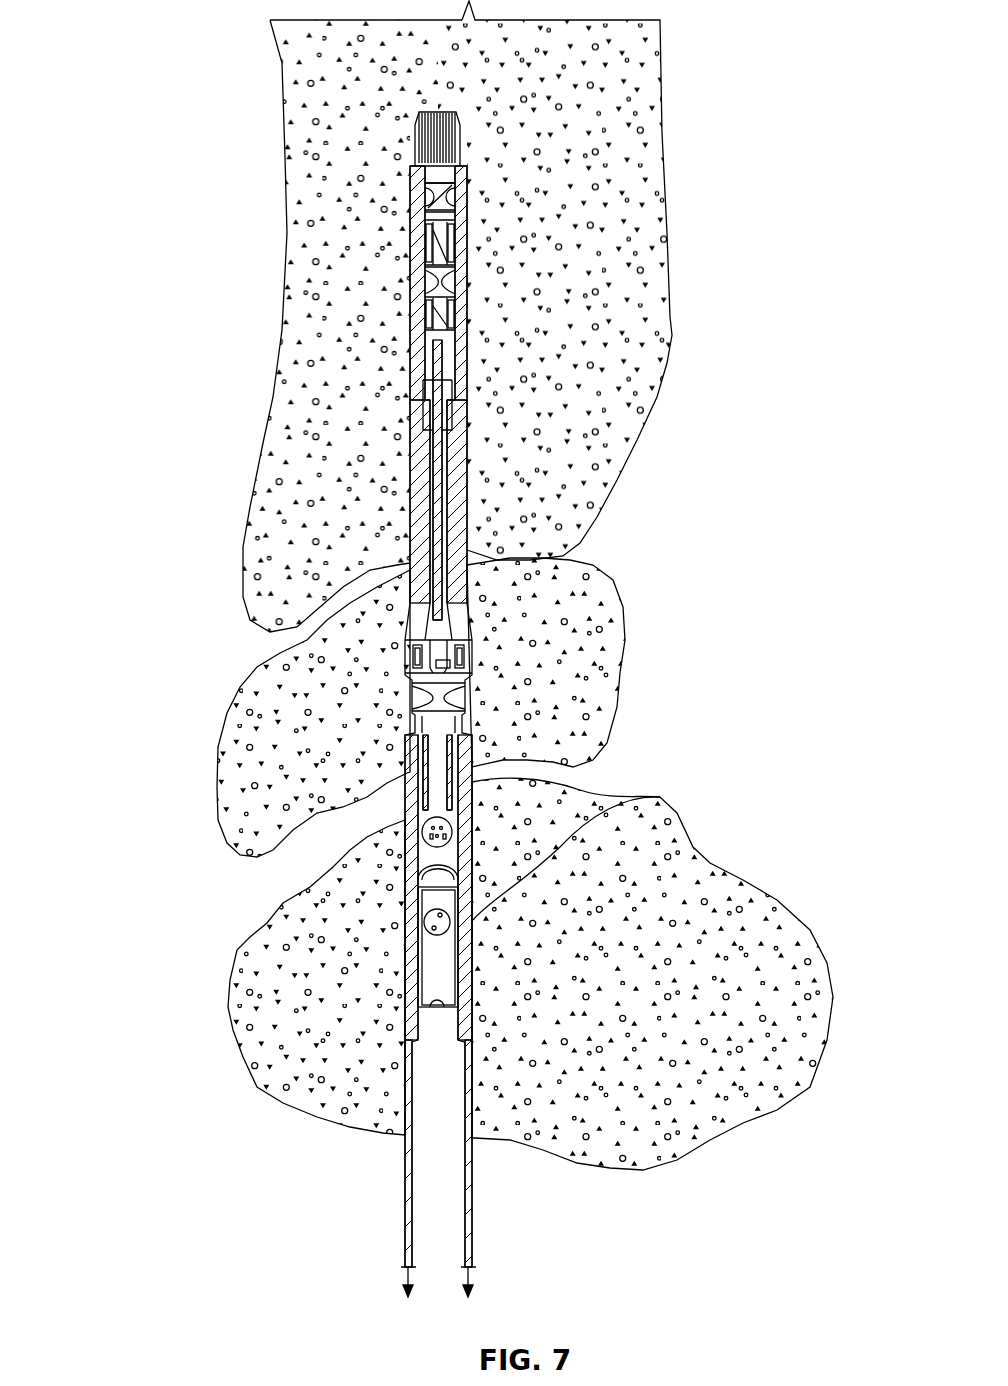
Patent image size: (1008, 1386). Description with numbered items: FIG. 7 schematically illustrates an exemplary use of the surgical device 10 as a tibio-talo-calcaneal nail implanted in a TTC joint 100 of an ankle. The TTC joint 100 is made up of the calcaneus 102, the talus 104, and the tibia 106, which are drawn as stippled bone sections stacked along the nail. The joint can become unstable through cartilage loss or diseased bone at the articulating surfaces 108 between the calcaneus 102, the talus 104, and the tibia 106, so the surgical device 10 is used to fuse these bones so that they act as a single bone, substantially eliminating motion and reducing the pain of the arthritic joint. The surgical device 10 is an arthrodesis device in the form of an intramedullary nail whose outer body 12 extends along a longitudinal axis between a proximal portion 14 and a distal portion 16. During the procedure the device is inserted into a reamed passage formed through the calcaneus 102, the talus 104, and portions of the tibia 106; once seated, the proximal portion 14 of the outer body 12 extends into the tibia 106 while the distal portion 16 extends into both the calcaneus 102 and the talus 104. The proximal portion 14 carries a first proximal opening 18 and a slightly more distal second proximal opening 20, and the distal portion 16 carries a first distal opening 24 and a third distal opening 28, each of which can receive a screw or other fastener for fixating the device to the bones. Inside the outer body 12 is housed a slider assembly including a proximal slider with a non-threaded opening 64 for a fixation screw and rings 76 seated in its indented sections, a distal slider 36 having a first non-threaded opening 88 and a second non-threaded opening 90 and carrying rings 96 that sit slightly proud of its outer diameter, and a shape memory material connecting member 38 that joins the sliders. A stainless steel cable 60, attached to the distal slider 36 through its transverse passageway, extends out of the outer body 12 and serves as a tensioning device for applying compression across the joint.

The tibio-talo-calcaneal (TTC) joint 100 is at (158, 27).
The tibia 106 is at (645, 102).
The talus 104 is at (613, 605).
The articulating surfaces 108 is at (255, 669).
The calcaneus 102 is at (765, 903).
The surgical device 10 is at (470, 362).
The first proximal opening 18 is at (463, 198).
The proximal portion 14 is at (405, 221).
The first distal opening 24 is at (467, 247).
The ring 76 is at (467, 228).
The non-threaded opening 64 is at (467, 282).
The second proximal opening 20 is at (467, 289).
The outer body 12 is at (470, 465).
The shape memory material connecting member 38 is at (437, 537).
The ring 96 is at (462, 657).
The first non-threaded opening 88 is at (457, 692).
The third distal opening 28 is at (457, 702).
The distal portion 16 is at (400, 843).
The second non-threaded opening 90 is at (472, 805).
The distal slider 36 is at (452, 822).
The cable 60 is at (470, 1193).